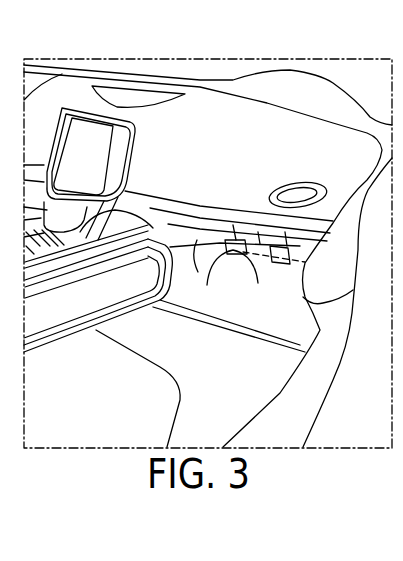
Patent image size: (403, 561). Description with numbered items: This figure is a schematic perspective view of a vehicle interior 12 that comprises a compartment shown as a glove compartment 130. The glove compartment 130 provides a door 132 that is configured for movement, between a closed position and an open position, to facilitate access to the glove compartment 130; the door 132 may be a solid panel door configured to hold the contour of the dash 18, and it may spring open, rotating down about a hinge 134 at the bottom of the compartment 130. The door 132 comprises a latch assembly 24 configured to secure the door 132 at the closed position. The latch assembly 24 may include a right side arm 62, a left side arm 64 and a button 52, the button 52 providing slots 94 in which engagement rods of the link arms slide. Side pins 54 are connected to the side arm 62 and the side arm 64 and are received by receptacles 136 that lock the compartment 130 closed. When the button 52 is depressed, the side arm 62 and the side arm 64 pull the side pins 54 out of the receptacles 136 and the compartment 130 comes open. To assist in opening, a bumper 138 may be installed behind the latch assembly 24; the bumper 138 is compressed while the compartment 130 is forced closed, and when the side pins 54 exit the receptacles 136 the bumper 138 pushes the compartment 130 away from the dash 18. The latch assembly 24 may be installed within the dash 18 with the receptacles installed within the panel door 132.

The vehicle interior 12 is at (212, 118).
The dash 18 is at (323, 303).
The latch assembly 24 is at (245, 272).
The button 52 is at (203, 240).
The side pins 54 is at (200, 230).
The right side arm 62 is at (291, 183).
The left side arm 64 is at (210, 225).
The slots 94 is at (155, 212).
The glove compartment 130 is at (240, 255).
The door 132 is at (133, 272).
The hinge 134 is at (172, 315).
The receptacles 136 is at (305, 262).
The bumper 138 is at (250, 228).